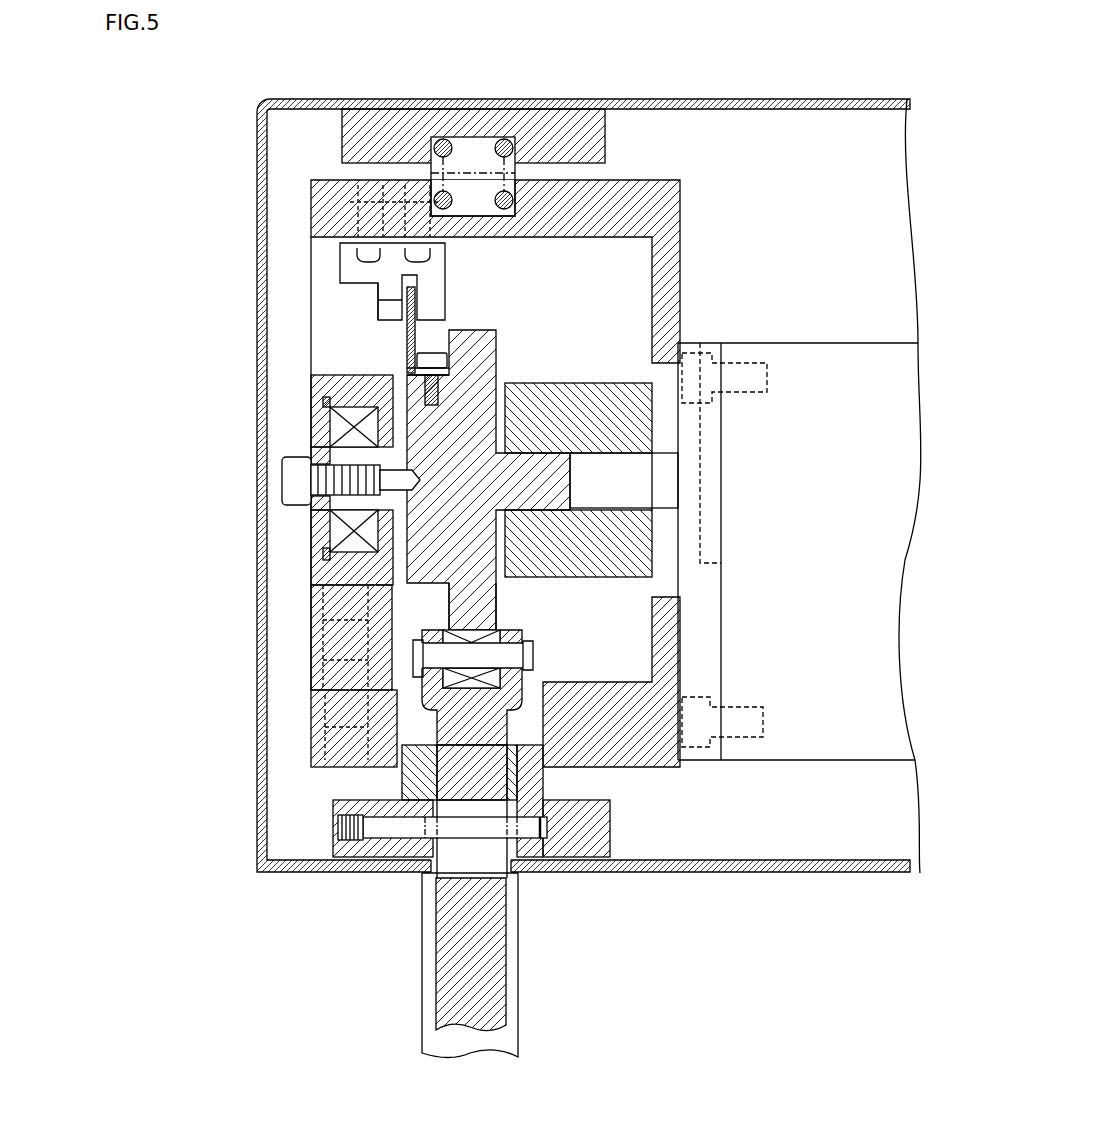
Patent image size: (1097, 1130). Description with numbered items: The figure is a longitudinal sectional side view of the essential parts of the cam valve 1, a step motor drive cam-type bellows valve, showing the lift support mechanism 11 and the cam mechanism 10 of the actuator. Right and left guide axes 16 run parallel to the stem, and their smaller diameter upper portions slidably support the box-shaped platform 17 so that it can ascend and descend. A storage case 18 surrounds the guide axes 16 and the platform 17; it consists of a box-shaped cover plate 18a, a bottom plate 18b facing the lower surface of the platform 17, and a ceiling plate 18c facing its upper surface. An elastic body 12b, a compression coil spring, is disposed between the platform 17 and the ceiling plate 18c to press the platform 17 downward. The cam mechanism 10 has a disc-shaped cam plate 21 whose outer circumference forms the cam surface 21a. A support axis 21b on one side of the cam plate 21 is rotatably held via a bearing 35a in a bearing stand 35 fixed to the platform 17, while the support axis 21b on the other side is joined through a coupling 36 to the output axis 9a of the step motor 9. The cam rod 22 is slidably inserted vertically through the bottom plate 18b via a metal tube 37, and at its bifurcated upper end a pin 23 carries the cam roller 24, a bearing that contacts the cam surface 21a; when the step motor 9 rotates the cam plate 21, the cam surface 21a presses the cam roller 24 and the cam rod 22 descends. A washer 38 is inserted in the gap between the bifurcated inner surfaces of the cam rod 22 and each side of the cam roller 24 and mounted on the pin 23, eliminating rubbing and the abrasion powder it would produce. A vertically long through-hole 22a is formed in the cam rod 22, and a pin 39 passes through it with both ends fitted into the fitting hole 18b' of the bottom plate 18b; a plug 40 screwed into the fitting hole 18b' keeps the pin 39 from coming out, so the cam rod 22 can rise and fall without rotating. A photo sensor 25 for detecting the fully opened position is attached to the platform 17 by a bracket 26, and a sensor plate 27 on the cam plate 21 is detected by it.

The cam valve 1 is at (218, 495).
The step motor 9 is at (868, 400).
The output axis 9a is at (640, 480).
The cam mechanism 10 is at (423, 604).
The lift support mechanism 11 is at (418, 1032).
The elastic body 12b is at (500, 140).
The guide axes 16 is at (428, 988).
The platform 17 is at (615, 215).
The storage case 18 is at (255, 170).
The cover plate 18a is at (828, 99).
The bottom plate 18b is at (588, 865).
The fitting hole 18b' is at (448, 837).
The ceiling plate 18c is at (383, 125).
The cam plate 21 is at (470, 355).
The cam surface 21a is at (483, 645).
The support axis 21b is at (360, 420).
The cam rod 22 is at (475, 765).
The through-hole 22a is at (482, 868).
The pin 23 is at (445, 655).
The cam roller 24 is at (495, 680).
The photo sensor 25 is at (390, 301).
The bracket 26 is at (342, 245).
The sensor plate 27 is at (416, 300).
The bearing stand 35 is at (320, 580).
The bearing 35a is at (330, 425).
The coupling 36 is at (612, 420).
The metal tube 37 is at (420, 773).
The washer 38 is at (490, 652).
The pin 39 is at (412, 857).
The plug 40 is at (345, 827).